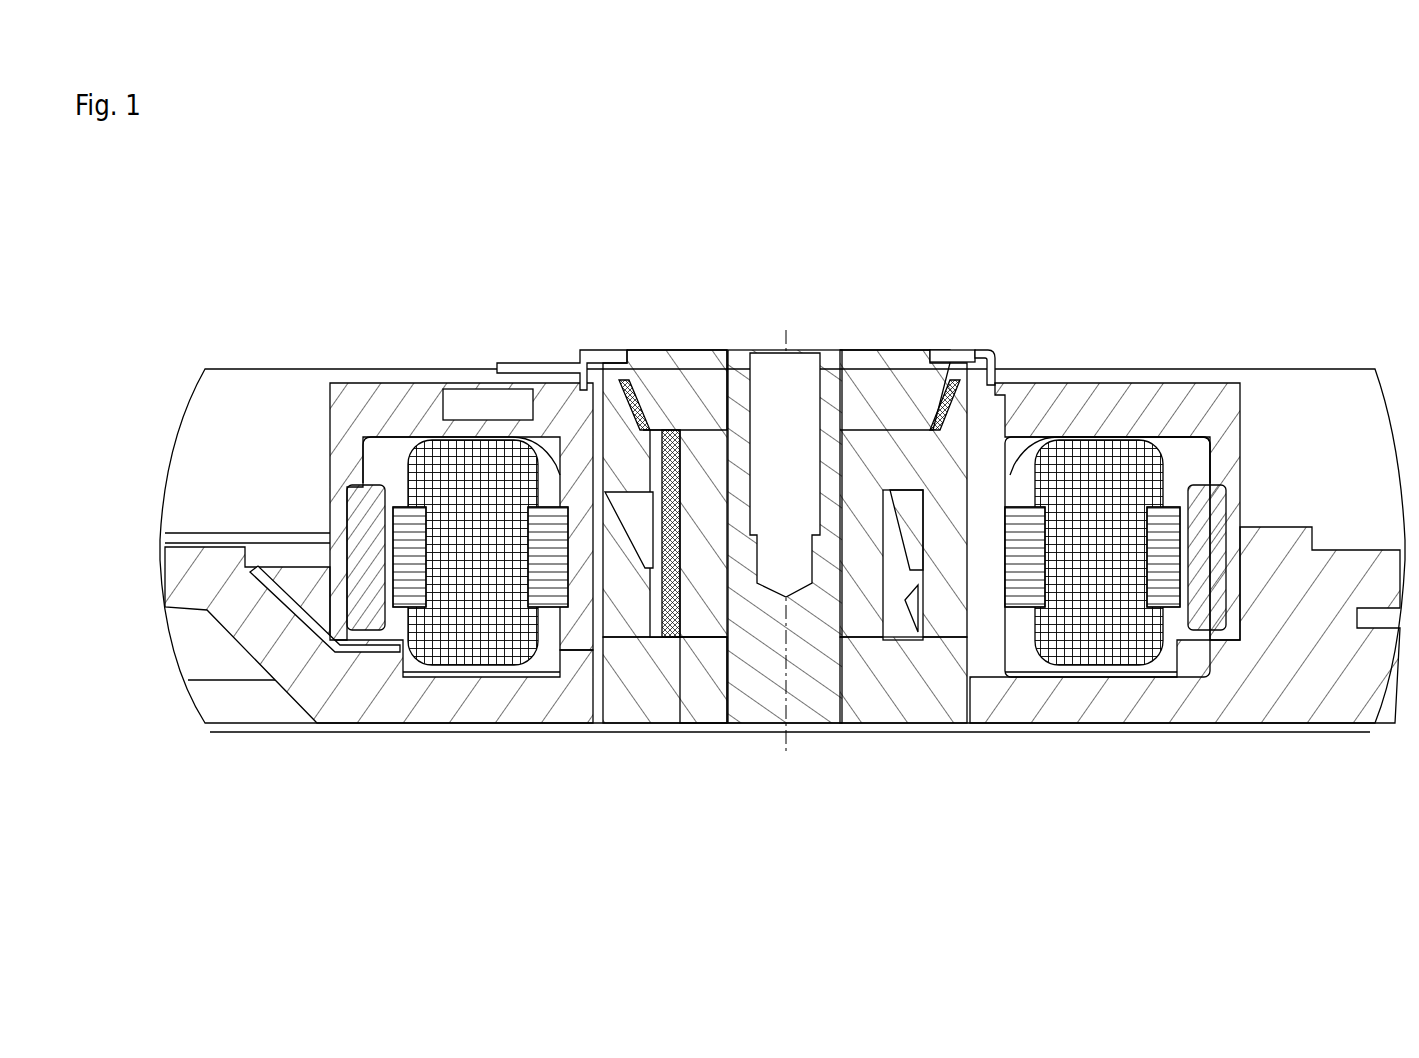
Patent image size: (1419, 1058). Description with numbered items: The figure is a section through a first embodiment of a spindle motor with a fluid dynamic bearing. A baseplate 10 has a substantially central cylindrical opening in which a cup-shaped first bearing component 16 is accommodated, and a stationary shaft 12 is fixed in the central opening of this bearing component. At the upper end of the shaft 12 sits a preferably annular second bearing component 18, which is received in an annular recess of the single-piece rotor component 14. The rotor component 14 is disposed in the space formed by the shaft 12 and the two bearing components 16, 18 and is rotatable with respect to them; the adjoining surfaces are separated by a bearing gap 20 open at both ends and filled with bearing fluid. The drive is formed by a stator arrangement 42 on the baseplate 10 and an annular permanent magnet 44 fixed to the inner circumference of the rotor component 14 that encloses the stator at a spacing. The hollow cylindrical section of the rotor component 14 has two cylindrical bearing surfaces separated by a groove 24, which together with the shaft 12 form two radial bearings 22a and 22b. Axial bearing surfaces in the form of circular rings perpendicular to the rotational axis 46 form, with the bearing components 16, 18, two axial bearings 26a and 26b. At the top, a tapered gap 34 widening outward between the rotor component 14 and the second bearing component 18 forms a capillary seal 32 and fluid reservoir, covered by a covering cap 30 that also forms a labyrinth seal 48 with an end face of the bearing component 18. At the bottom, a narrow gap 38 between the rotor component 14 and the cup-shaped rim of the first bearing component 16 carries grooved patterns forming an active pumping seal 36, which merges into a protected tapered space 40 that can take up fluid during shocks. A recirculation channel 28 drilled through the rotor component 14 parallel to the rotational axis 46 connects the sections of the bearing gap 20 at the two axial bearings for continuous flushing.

The baseplate 10 is at (1180, 695).
The shaft 12 is at (822, 690).
The rotor component 14 is at (1167, 393).
The first bearing component 16 is at (925, 650).
The second bearing component 18 is at (863, 390).
The bearing gap 20 is at (741, 460).
The radial bearing 22a is at (745, 470).
The radial bearing 22b is at (735, 625).
The groove 24 is at (598, 728).
The axial bearing 26a is at (700, 430).
The axial bearing 26b is at (715, 560).
The recirculation channel 28 is at (505, 372).
The covering cap 30 is at (585, 368).
The capillary seal 32 is at (965, 375).
The tapered gap 34 is at (952, 385).
The pumping seal 36 is at (975, 650).
The narrow gap 38 is at (912, 625).
The tapered space 40 is at (923, 520).
The stator arrangement 42 is at (1090, 643).
The annular permanent magnet 44 is at (1207, 573).
The rotational axis 46 is at (786, 340).
The labyrinth seal 48 is at (637, 413).